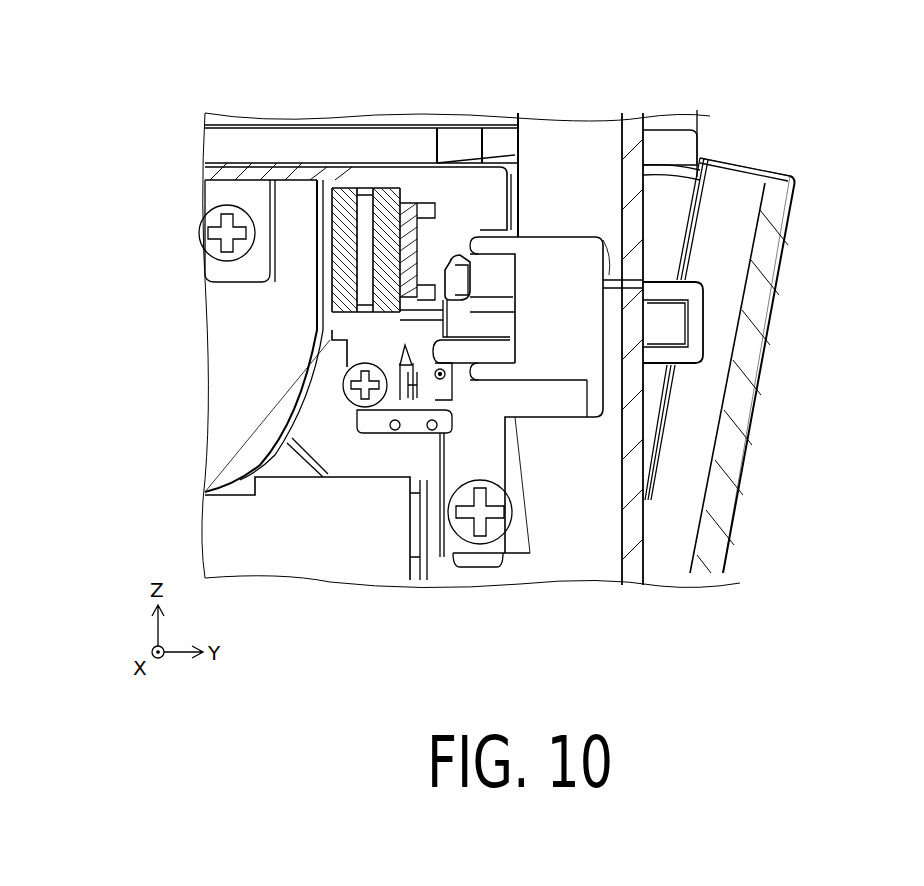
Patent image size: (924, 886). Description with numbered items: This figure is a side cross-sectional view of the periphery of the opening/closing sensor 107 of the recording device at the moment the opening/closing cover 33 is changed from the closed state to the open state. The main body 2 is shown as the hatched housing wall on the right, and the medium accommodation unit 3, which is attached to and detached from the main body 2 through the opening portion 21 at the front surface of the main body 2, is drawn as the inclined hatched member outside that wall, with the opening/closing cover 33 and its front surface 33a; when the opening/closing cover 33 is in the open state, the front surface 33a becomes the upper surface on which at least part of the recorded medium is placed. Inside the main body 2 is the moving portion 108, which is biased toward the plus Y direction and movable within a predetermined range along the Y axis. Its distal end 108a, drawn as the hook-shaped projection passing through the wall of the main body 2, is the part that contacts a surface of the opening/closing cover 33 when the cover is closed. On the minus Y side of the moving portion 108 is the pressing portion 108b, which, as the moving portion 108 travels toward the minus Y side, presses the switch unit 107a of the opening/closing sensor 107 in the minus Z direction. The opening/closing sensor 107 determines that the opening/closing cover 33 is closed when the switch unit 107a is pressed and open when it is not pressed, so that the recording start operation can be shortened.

The main body 2 is at (661, 125).
The medium accommodation unit 3 is at (808, 392).
The opening portion 21 is at (805, 161).
The opening/closing cover 33 is at (700, 387).
The front surface 33a is at (672, 233).
The opening/closing sensor 107 is at (352, 398).
The switch unit 107a is at (405, 362).
The moving portion 108 is at (605, 250).
The distal end 108a is at (705, 313).
The pressing portion 108b is at (478, 353).